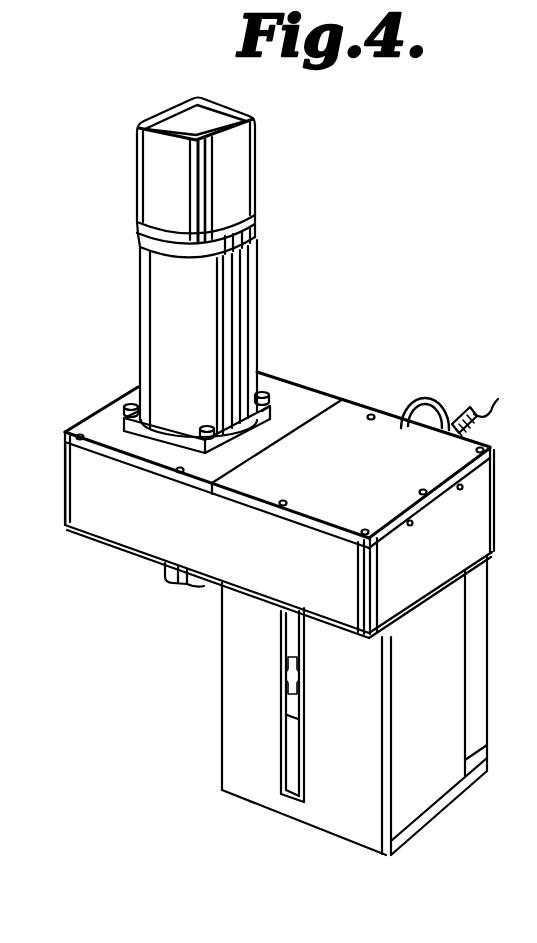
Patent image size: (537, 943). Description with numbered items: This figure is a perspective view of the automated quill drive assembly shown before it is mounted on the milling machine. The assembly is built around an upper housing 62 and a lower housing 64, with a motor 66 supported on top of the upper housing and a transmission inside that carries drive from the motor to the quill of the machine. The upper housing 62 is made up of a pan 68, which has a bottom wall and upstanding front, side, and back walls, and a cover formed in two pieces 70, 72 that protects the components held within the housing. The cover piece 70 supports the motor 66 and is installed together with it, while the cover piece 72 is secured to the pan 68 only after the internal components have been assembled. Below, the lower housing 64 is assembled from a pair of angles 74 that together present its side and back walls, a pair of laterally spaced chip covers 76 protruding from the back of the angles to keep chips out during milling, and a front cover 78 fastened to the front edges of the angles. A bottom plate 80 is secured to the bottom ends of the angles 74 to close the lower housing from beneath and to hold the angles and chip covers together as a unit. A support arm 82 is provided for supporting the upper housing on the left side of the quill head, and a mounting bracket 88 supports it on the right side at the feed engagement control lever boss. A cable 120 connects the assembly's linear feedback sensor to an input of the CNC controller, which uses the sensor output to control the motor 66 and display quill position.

The upper housing 62 is at (67, 537).
The lower housing 64 is at (238, 799).
The motor 66 is at (260, 298).
The pan 68 is at (161, 542).
The cover piece 70 is at (291, 394).
The cover piece 72 is at (326, 516).
The angles 74 is at (455, 620).
The chip covers 76 is at (479, 692).
The front cover 78 is at (342, 815).
The bottom plate 80 is at (418, 817).
The support arm 82 is at (191, 597).
The mounting bracket 88 is at (425, 386).
The cable 120 is at (485, 403).